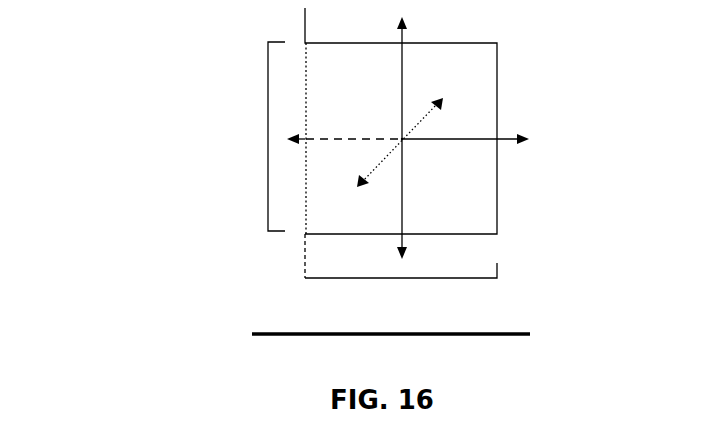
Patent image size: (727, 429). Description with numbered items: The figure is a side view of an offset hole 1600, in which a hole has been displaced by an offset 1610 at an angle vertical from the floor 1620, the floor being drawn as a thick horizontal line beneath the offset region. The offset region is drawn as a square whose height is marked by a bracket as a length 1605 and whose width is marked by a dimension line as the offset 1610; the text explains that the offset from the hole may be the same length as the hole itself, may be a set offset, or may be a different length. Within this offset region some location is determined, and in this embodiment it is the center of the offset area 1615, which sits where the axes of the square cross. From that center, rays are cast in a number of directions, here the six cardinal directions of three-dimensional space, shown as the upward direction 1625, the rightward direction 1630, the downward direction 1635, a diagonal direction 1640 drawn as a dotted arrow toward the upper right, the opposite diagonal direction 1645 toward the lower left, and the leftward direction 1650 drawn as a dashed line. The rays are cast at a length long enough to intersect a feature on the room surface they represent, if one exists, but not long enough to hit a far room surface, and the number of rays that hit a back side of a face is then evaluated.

The offset hole 1600 is at (150, 59).
The length 1605 is at (267, 201).
The offset 1610 is at (497, 264).
The center of the offset area 1615 is at (400, 136).
The floor 1620 is at (530, 336).
The cardinal direction 1625 is at (405, 33).
The cardinal direction 1630 is at (513, 141).
The cardinal direction 1635 is at (402, 221).
The cardinal direction 1640 is at (446, 101).
The cardinal direction 1645 is at (380, 160).
The cardinal direction 1650 is at (330, 135).